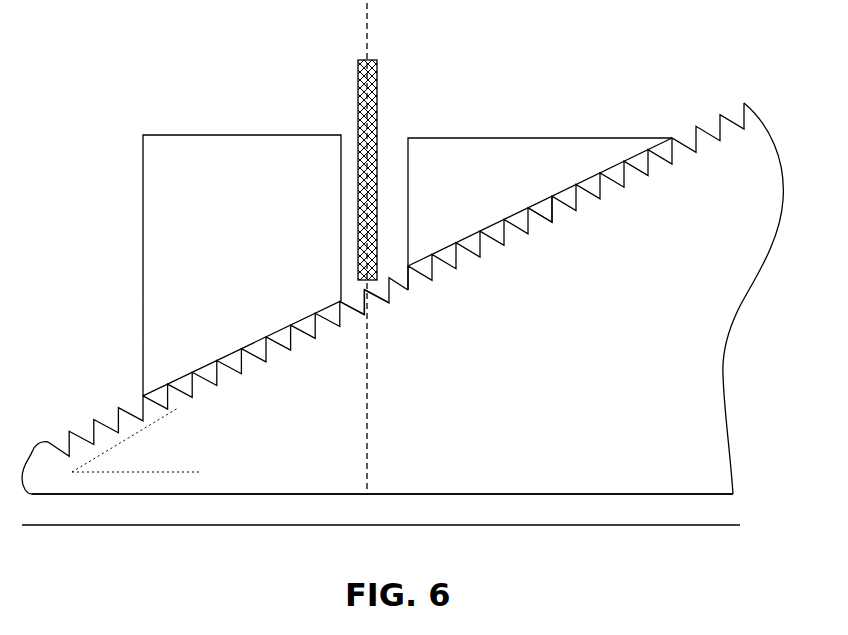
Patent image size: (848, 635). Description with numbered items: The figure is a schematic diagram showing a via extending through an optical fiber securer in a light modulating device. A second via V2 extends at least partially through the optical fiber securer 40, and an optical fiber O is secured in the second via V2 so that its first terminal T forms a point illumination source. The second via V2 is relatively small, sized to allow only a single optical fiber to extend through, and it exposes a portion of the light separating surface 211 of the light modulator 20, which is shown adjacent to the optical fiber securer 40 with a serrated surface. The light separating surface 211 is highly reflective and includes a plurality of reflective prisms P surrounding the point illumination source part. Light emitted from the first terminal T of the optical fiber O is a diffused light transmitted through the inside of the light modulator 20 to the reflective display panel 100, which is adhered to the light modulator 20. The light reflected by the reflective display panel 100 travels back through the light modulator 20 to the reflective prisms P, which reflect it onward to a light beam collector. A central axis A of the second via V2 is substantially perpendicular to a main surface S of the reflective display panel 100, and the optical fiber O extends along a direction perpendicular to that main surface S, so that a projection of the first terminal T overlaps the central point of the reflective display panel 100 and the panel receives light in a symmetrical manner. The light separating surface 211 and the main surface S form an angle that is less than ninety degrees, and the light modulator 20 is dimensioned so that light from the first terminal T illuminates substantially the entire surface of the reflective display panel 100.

The light modulator 20 is at (402, 298).
The optical fiber securer 40 is at (242, 265).
The light separating surface 211 is at (505, 216).
The reflective display panel 100 is at (381, 514).
The optical fiber O is at (359, 118).
The second via V2 is at (398, 187).
The first terminal T is at (364, 283).
The reflective prisms P is at (539, 205).
The central axis A is at (367, 410).
The main surface S is at (540, 493).